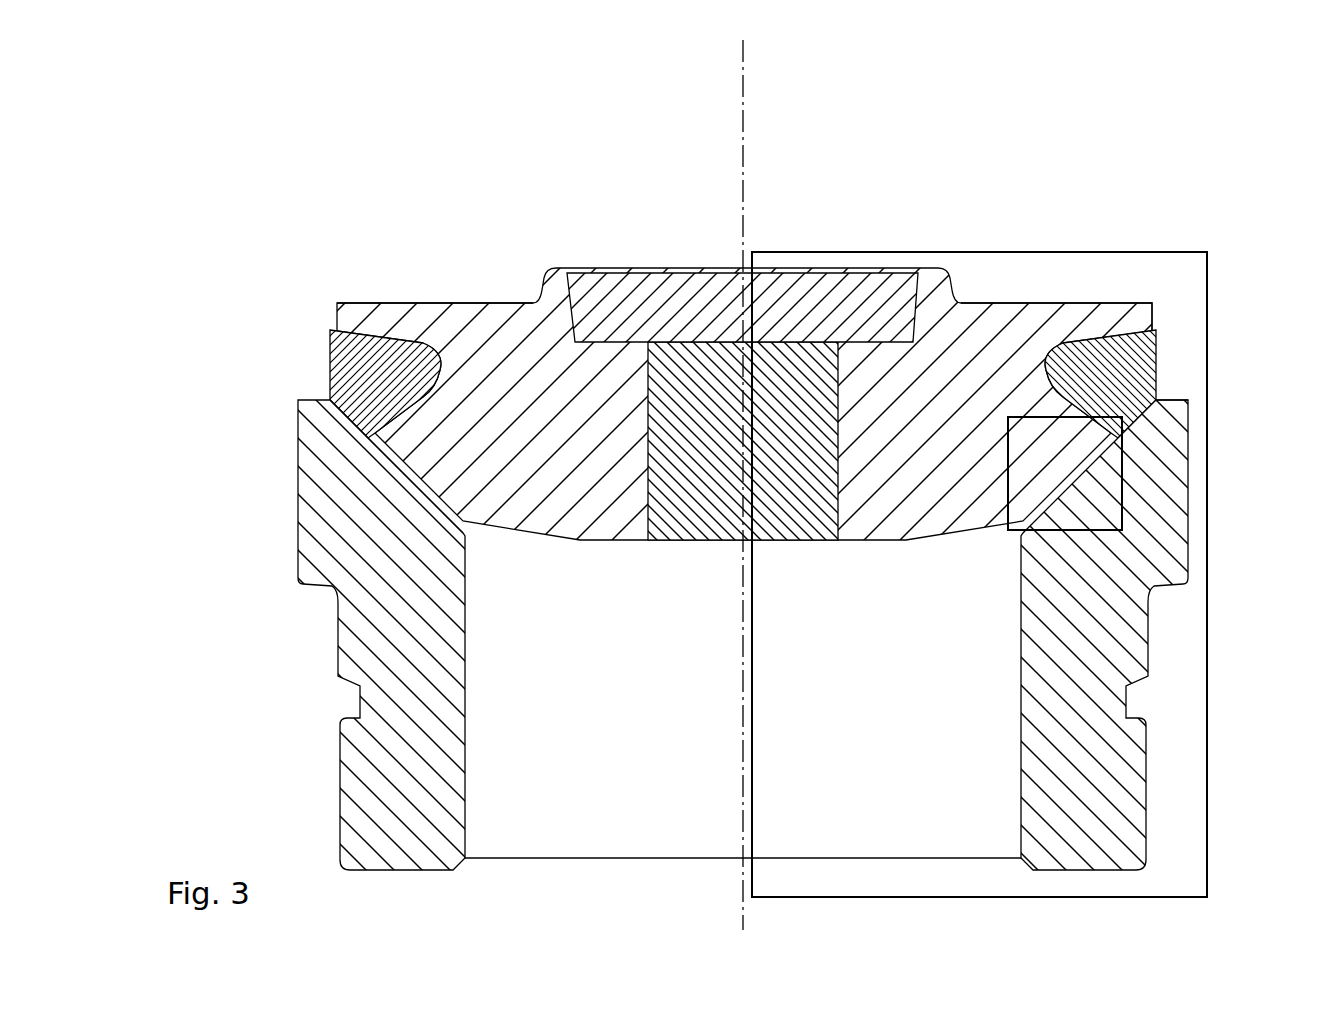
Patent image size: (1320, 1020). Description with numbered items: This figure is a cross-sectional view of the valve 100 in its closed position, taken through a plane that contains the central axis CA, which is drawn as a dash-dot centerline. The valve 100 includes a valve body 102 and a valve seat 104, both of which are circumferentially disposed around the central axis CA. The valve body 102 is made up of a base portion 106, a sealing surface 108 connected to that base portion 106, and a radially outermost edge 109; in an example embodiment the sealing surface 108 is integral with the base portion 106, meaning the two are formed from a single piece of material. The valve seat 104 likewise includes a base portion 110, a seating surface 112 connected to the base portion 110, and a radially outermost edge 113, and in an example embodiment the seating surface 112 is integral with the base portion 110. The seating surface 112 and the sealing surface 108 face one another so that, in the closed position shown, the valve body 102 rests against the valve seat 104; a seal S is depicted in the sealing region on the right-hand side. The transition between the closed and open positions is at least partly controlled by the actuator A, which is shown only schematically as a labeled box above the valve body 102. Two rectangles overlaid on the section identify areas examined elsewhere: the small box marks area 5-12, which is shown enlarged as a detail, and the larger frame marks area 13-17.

The valve 100 is at (1128, 80).
The valve body 102 is at (503, 298).
The valve seat 104 is at (1192, 508).
The base portion 106 is at (410, 303).
The sealing surface 108 is at (420, 487).
The radially outermost edge 109 is at (1150, 325).
The base portion 110 is at (298, 555).
The seating surface 112 is at (380, 440).
The radially outermost edge 113 is at (1188, 400).
The seal S is at (1160, 343).
The central axis CA is at (743, 105).
The actuator A is at (609, 273).
The region shown in FIGS. 13-17 is at (878, 252).
The area 5-12 is at (1030, 417).